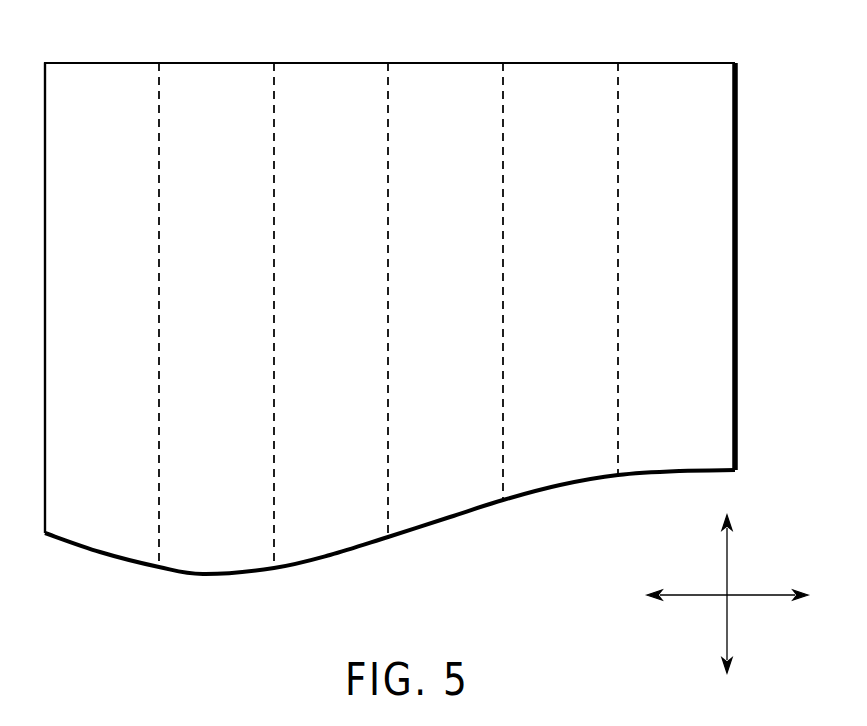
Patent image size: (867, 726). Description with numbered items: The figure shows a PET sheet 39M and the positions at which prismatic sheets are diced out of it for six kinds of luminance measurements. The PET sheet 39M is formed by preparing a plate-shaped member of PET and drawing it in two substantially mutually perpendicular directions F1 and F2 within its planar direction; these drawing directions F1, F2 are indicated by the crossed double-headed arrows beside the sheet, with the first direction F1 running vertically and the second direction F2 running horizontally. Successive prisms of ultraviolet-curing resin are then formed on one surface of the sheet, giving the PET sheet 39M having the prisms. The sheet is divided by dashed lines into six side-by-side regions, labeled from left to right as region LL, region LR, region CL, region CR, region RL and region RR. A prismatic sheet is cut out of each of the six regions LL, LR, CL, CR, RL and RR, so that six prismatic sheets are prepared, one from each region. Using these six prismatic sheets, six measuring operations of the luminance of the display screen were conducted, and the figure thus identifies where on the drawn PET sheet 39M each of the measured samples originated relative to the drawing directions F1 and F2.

The PET sheet 39M is at (710, 308).
The region LL is at (105, 83).
The region LR is at (223, 83).
The region CL is at (337, 83).
The region CR is at (453, 83).
The region RL is at (567, 83).
The region RR is at (678, 83).
The planar direction F1 is at (728, 579).
The planar direction F2 is at (743, 595).